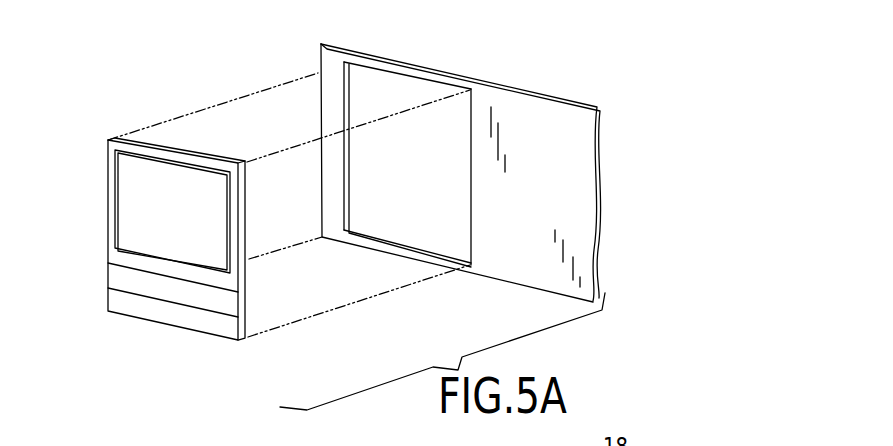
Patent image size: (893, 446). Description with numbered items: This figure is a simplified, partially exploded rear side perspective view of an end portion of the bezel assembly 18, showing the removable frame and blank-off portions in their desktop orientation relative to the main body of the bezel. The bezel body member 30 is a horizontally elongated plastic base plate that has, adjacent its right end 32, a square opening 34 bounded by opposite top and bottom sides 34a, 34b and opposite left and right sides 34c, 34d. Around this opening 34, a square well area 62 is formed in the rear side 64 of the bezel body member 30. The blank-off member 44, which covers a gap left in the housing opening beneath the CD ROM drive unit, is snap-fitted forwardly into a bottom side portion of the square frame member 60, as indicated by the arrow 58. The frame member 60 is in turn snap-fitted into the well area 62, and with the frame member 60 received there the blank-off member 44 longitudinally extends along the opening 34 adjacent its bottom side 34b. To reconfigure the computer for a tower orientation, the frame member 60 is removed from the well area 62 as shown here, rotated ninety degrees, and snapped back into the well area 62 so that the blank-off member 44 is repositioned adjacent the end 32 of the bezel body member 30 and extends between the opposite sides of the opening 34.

The bezel assembly 18 is at (530, 35).
The bezel body member 30 is at (601, 123).
The right end of bezel body member 32 is at (318, 80).
The square opening 34 is at (388, 77).
The top side of opening 34a is at (425, 80).
The bottom side of opening 34b is at (410, 242).
The left side of opening 34c is at (471, 177).
The right side of opening 34d is at (348, 140).
The blank-off member 44 is at (158, 292).
The arrow 58 is at (217, 225).
The frame member 60 is at (106, 187).
The well area 62 is at (330, 180).
The rear side of bezel body member 64 is at (539, 129).